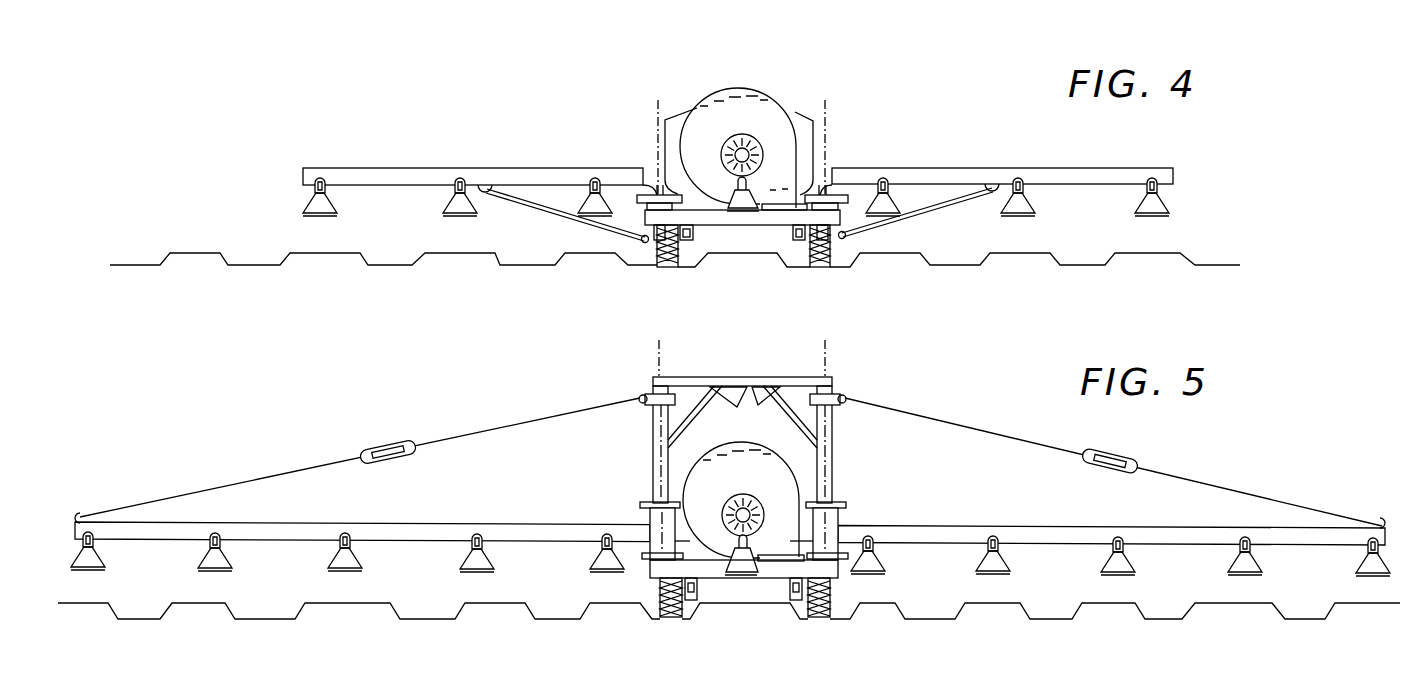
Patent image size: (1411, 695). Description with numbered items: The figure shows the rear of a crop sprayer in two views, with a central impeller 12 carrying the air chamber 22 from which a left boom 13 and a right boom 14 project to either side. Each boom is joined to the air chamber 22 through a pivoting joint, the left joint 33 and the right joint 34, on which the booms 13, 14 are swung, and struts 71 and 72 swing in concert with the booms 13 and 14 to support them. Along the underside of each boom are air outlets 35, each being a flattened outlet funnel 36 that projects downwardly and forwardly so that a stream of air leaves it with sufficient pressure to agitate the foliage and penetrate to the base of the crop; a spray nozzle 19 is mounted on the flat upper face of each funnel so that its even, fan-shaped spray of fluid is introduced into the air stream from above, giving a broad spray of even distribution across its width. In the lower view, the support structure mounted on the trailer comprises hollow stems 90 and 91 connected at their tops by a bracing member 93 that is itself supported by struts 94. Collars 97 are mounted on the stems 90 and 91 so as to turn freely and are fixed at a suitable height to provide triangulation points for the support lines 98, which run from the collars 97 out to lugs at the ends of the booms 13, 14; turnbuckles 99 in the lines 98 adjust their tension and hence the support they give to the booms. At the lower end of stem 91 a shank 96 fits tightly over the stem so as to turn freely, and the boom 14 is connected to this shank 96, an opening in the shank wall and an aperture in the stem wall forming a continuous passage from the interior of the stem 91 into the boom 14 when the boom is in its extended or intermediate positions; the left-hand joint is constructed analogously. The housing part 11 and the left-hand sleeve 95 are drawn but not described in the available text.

In FIG. 4, the tank housing shroud 11 is at (798, 124).
In FIG. 4, the central impeller 12 is at (703, 122).
In FIG. 5, the central impeller 12 is at (707, 522).
In FIG. 4, the boom 13 is at (416, 172).
In FIG. 5, the boom 13 is at (395, 527).
In FIG. 4, the boom 14 is at (970, 175).
In FIG. 5, the boom 14 is at (952, 529).
In FIG. 4, the spray nozzle 19 is at (452, 196).
In FIG. 5, the spray nozzle 19 is at (100, 557).
In FIG. 4, the air chamber 22 is at (790, 226).
In FIG. 5, the air chamber 22 is at (779, 580).
In FIG. 4, the joint 33 is at (641, 166).
In FIG. 4, the joint 34 is at (840, 170).
In FIG. 4, the air outlet 35 is at (592, 178).
In FIG. 4, the outlet funnel 36 is at (450, 213).
In FIG. 5, the outlet funnel 36 is at (210, 566).
In FIG. 4, the strut 71 is at (546, 214).
In FIG. 4, the strut 72 is at (928, 210).
In FIG. 5, the hollow stem 90 is at (654, 430).
In FIG. 5, the hollow stem 91 is at (834, 456).
In FIG. 5, the bracing member 93 is at (702, 380).
In FIG. 5, the strut 94 is at (744, 386).
In FIG. 5, the left boom support sleeve 95 is at (648, 527).
In FIG. 5, the shank 96 is at (842, 522).
In FIG. 5, the collar 97 is at (640, 394).
In FIG. 5, the support line 98 is at (293, 470).
In FIG. 5, the turnbuckle 99 is at (386, 444).